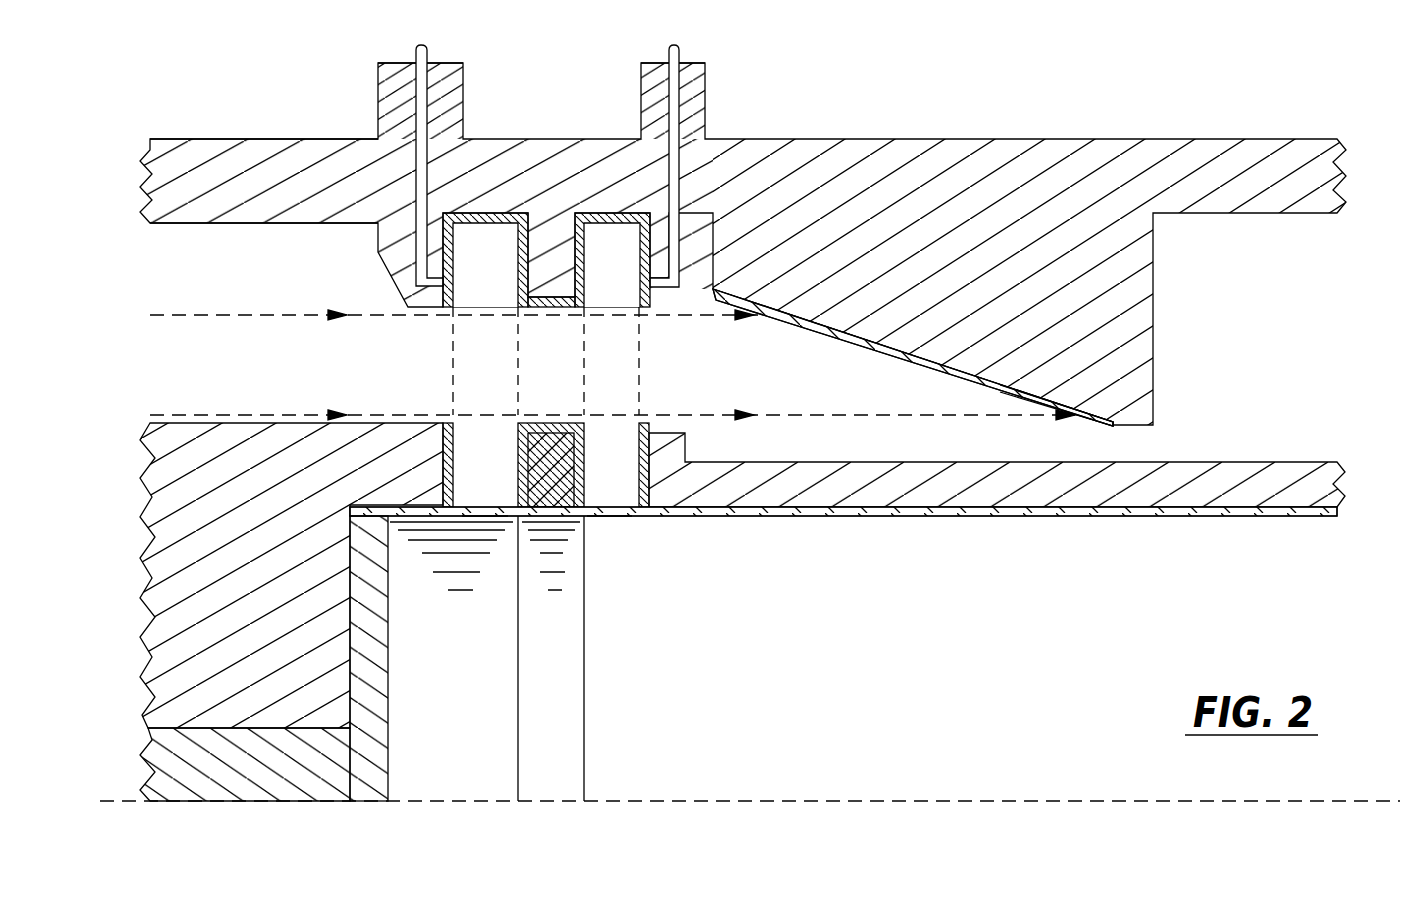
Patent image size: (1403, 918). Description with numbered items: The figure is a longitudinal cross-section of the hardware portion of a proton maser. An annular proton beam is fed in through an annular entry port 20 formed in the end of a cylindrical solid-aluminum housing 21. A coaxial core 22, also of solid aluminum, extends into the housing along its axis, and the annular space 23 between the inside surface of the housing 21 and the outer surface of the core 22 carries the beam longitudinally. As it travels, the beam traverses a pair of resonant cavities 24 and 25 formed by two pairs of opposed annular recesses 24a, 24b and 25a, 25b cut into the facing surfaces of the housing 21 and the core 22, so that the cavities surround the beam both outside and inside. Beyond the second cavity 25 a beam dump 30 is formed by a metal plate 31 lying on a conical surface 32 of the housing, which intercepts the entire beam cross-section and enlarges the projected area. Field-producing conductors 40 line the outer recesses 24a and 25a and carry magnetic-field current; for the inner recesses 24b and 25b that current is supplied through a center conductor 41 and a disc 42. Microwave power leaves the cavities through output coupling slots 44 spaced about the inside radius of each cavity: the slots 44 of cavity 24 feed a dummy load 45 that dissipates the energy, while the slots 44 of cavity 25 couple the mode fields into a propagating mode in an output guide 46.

The annular entry port 20 is at (423, 339).
The aluminum housing 21 is at (220, 138).
The coaxial core 22 is at (183, 423).
The annular space 23 is at (153, 273).
The first resonant cavity 24 is at (453, 364).
The outer annular recess of first cavity 24a is at (466, 279).
The inner annular recess of first cavity 24b is at (464, 486).
The second resonant cavity 25 is at (640, 347).
The outer annular recess of second cavity 25a is at (590, 279).
The inner annular recess of second cavity 25b is at (592, 486).
The beam dump 30 is at (962, 262).
The metal plate 31 is at (987, 383).
The conical surface 32 is at (880, 340).
The field-producing conductors 40 is at (453, 445).
The center conductor 41 is at (248, 782).
The disc 42 is at (388, 610).
The output coupling slots 44 is at (613, 513).
The dummy load 45 is at (518, 675).
The output guide 46 is at (1087, 515).